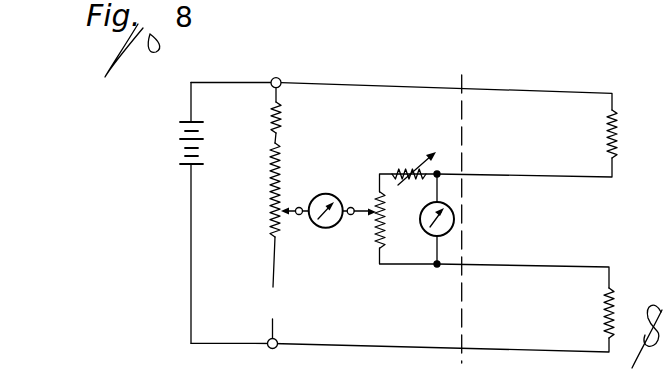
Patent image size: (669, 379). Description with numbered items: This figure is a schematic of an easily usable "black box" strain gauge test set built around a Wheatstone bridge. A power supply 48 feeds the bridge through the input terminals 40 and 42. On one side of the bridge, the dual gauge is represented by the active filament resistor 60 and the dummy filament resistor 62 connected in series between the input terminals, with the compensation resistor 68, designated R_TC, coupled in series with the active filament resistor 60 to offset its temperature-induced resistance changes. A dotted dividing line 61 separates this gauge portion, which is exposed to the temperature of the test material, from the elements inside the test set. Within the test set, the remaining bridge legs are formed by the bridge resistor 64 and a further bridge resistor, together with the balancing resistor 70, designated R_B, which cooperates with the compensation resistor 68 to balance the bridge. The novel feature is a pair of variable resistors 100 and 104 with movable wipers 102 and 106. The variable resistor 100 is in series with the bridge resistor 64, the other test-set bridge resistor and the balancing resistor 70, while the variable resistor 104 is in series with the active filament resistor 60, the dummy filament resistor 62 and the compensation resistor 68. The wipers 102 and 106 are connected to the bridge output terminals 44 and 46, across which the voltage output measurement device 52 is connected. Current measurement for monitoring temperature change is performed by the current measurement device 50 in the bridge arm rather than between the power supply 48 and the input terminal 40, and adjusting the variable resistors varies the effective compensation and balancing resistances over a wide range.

The input terminal 40 is at (280, 79).
The input terminal 42 is at (276, 348).
The output terminal 44 is at (351, 215).
The output terminal 46 is at (298, 215).
The power supply 48 is at (201, 122).
The indicating meter 50 is at (455, 217).
The voltage output measurement device 52 is at (326, 228).
The active filament resistor 60 is at (606, 142).
The dividing line 61 is at (460, 355).
The dummy filament resistor 62 is at (601, 307).
The bridge resistor 64 is at (279, 115).
The compensation resistor 68 is at (408, 167).
The balancing resistor 70 is at (277, 158).
The variable resistor 100 is at (268, 228).
The movable wiper 102 is at (288, 207).
The variable resistor 104 is at (383, 244).
The movable wiper 106 is at (362, 208).